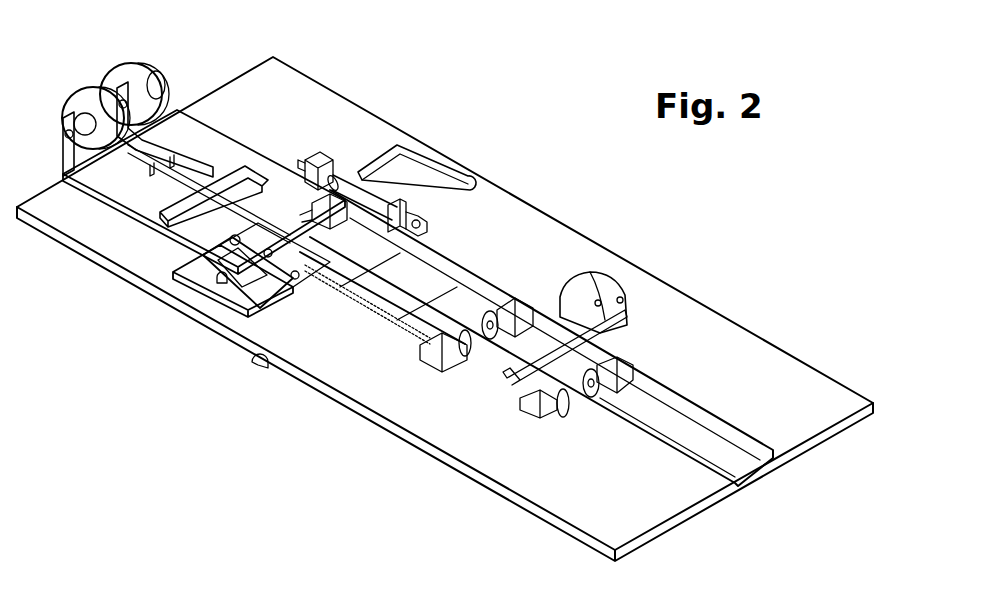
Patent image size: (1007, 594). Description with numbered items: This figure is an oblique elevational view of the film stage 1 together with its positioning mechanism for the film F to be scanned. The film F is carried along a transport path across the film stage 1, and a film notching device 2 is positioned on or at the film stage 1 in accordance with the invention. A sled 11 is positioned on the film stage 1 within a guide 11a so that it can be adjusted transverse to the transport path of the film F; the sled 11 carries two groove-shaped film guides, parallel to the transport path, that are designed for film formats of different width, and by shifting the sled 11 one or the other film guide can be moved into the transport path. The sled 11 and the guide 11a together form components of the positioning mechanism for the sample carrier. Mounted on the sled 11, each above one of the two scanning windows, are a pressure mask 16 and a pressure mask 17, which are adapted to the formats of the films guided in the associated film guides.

The film stage 1 is at (450, 423).
The film notching device 2 is at (332, 210).
The sled 11 is at (243, 300).
The guide 11a is at (405, 172).
The pressure mask 16 is at (272, 203).
The pressure mask 17 is at (203, 265).
The film F is at (415, 293).